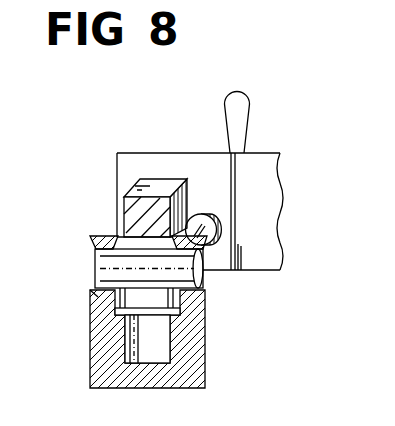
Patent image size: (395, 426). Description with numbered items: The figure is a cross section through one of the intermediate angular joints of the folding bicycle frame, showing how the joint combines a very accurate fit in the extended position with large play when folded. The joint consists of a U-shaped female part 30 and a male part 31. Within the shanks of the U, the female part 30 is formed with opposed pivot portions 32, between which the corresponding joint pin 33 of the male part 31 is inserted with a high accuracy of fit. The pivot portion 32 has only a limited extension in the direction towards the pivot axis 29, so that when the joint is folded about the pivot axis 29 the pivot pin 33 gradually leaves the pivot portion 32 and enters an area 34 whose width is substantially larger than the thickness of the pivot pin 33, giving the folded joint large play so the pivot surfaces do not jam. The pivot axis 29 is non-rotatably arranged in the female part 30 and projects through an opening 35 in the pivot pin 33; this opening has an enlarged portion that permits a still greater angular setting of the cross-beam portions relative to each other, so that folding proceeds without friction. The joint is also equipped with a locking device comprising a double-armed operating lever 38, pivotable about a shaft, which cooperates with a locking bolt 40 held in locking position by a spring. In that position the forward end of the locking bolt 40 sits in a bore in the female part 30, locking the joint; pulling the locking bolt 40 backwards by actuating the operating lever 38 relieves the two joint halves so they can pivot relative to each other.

The pivot axis 29 is at (115, 265).
The female part 30 is at (108, 353).
The male part 31 is at (208, 183).
The pivot portion 32 is at (128, 343).
The joint pin 33 is at (148, 215).
The area having larger play 34 is at (118, 300).
The opening 35 is at (147, 238).
The operating lever 38 is at (238, 105).
The locking bolt 40 is at (217, 229).